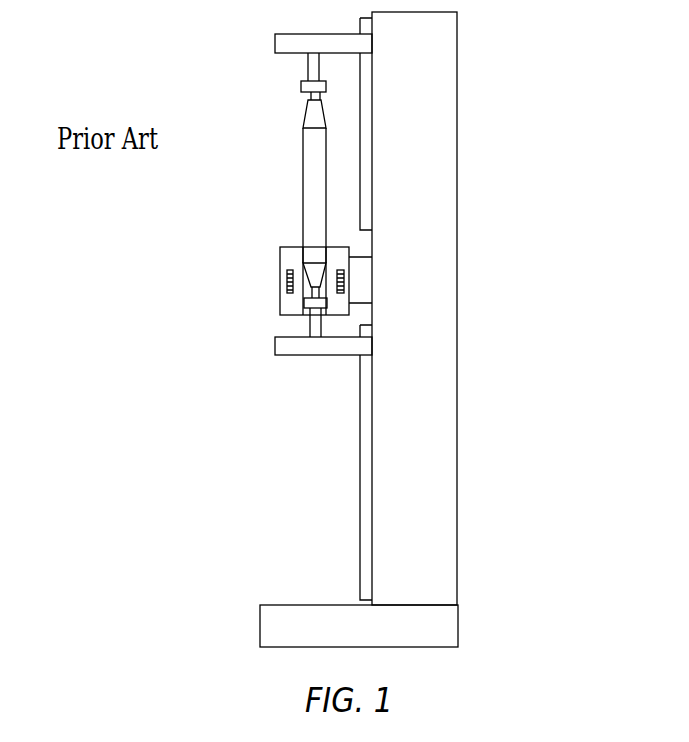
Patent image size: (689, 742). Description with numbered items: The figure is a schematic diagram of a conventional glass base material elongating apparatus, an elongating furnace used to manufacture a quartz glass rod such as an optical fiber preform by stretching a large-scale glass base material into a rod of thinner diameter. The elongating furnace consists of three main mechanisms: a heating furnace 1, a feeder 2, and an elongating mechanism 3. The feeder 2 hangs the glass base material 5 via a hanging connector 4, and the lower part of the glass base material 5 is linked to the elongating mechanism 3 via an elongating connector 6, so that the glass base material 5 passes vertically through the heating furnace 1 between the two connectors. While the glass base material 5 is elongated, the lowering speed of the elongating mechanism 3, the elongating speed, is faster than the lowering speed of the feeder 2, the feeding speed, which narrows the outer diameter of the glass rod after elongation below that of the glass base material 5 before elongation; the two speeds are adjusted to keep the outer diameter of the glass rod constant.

The heating furnace 1 is at (281, 291).
The feeder 2 is at (279, 42).
The elongating mechanism 3 is at (293, 348).
The hanging connector 4 is at (306, 88).
The glass base material 5 is at (310, 185).
The elongating connector 6 is at (303, 306).